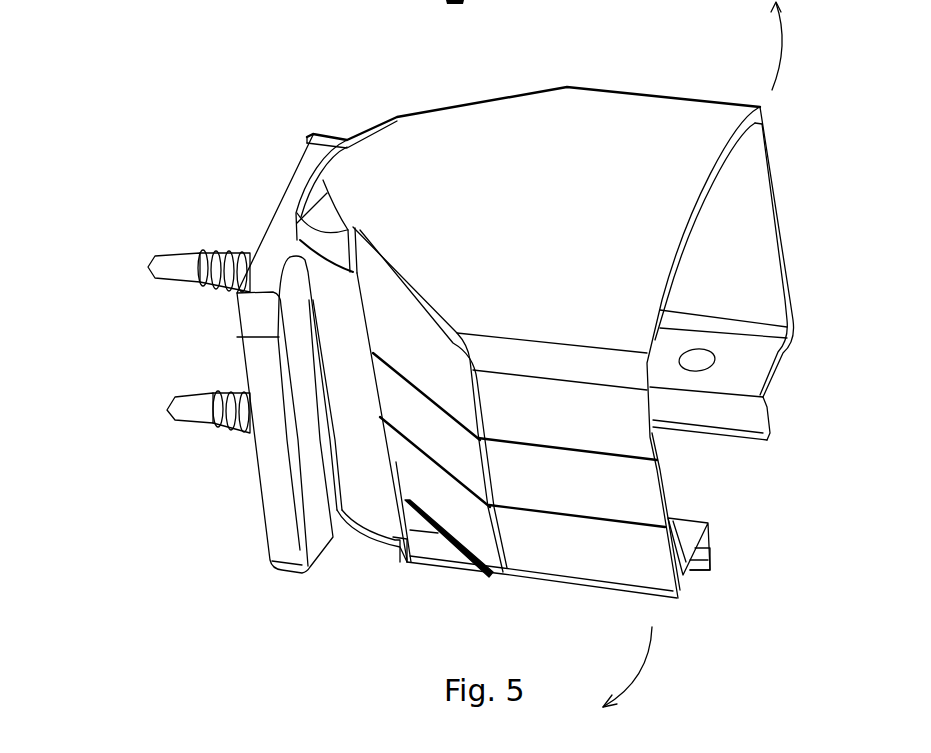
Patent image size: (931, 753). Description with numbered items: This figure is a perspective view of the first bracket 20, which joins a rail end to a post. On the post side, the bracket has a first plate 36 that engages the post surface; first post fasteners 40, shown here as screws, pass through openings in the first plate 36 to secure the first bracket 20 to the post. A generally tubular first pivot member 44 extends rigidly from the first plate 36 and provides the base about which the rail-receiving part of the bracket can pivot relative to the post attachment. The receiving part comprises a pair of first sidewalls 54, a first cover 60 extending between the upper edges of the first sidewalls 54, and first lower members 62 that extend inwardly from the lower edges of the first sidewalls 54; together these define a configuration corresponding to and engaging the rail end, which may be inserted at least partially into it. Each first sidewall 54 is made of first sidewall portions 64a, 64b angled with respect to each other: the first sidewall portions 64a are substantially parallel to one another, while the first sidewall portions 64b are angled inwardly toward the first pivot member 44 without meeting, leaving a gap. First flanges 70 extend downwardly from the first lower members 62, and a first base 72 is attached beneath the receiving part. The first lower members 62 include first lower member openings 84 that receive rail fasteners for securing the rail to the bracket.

The first bracket 20 is at (165, 90).
The first plate 36 is at (277, 513).
The first post fasteners 40 is at (173, 265).
The first pivot member 44 is at (367, 409).
The first sidewalls 54 is at (757, 217).
The first cover 60 is at (618, 127).
The first lower members 62 is at (750, 368).
The first sidewall portions 64a is at (575, 434).
The first sidewall portions 64b is at (433, 354).
The first flanges 70 is at (742, 417).
The first base 72 is at (363, 537).
The first lower member openings 84 is at (698, 363).